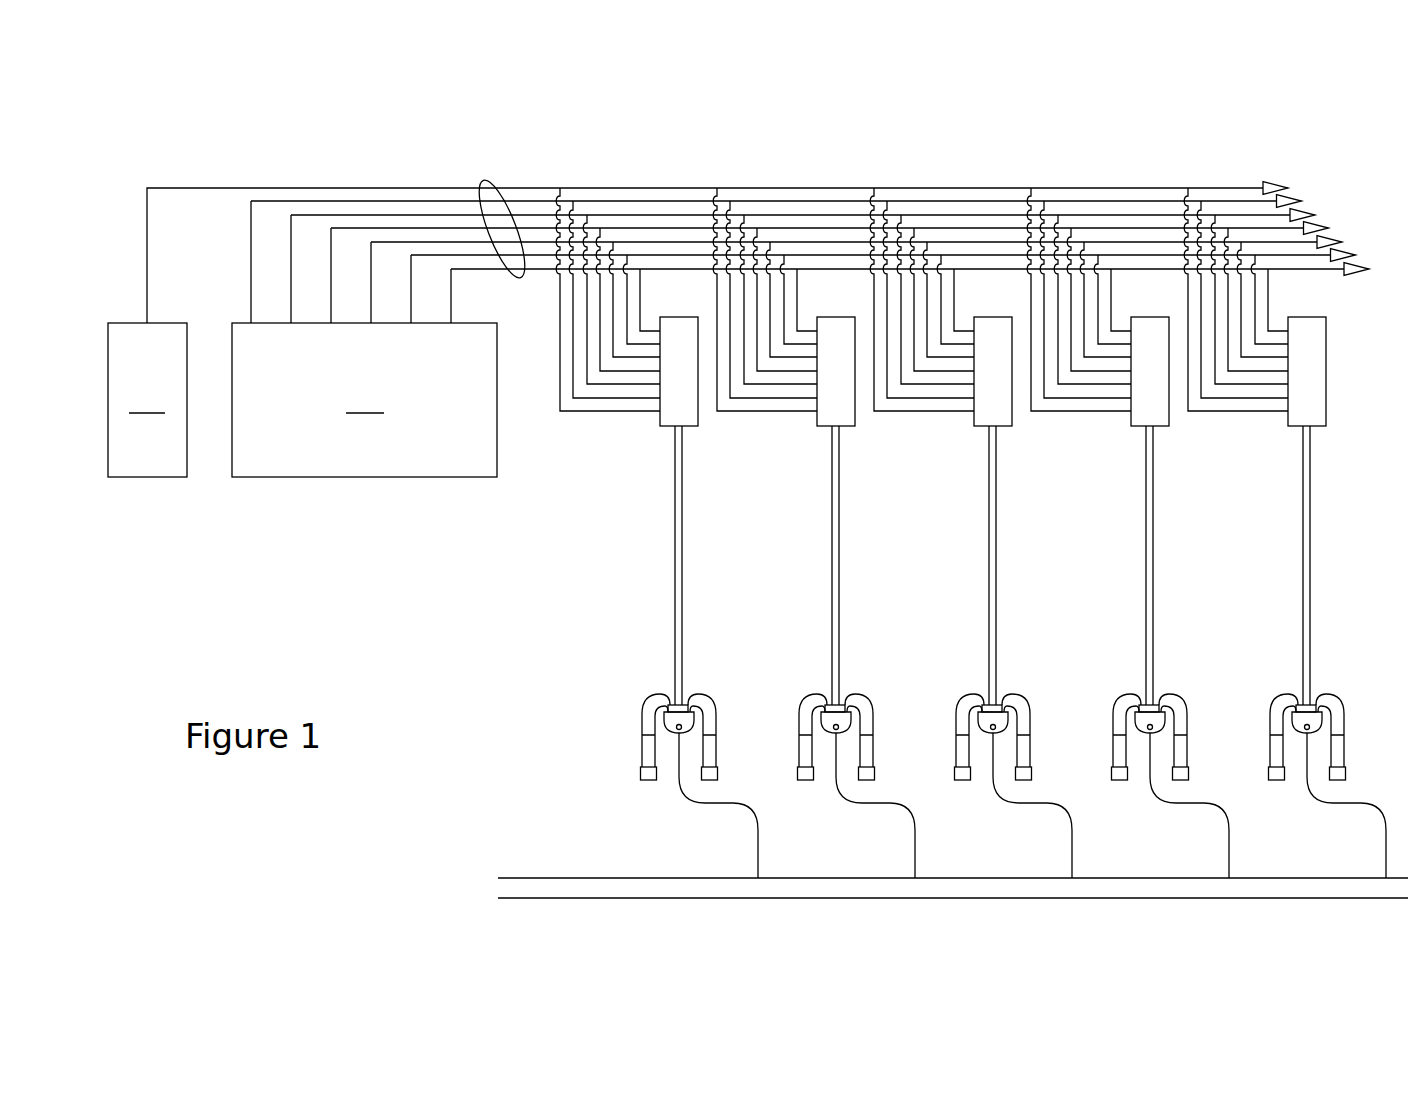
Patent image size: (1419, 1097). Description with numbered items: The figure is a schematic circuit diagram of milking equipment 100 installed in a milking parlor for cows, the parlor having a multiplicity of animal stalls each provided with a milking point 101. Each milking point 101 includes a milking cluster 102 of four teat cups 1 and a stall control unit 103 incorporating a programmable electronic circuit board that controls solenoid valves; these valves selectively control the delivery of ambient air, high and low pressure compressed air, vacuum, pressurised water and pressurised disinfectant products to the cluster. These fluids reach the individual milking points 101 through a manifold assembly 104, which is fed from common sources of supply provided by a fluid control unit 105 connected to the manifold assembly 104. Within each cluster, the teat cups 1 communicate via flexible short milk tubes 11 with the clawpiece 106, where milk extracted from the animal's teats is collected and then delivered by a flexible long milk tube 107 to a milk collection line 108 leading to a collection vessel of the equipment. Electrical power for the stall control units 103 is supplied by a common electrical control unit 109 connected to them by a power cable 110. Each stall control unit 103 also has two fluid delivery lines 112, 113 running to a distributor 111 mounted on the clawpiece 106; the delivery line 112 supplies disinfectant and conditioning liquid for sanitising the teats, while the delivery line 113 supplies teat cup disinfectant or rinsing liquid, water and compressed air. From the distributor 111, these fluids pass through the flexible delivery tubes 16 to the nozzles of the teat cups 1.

The teat cup 1 is at (803, 759).
The short milk tube 11 is at (708, 718).
The flexible delivery tube 16 is at (640, 711).
The milking equipment 100 is at (471, 602).
The milking point 101 is at (1354, 359).
The milking cluster 102 is at (612, 740).
The stall control unit 103 is at (682, 411).
The manifold assembly 104 is at (485, 183).
The fluid control unit 105 is at (364, 339).
The clawpiece 106 is at (679, 738).
The long milk tube 107 is at (758, 850).
The milk collection line 108 is at (768, 890).
The electrical control unit 109 is at (147, 400).
The power cable 110 is at (233, 188).
The distributor 111 is at (685, 710).
The fluid delivery line 112 is at (680, 583).
The fluid delivery line 113 is at (673, 633).